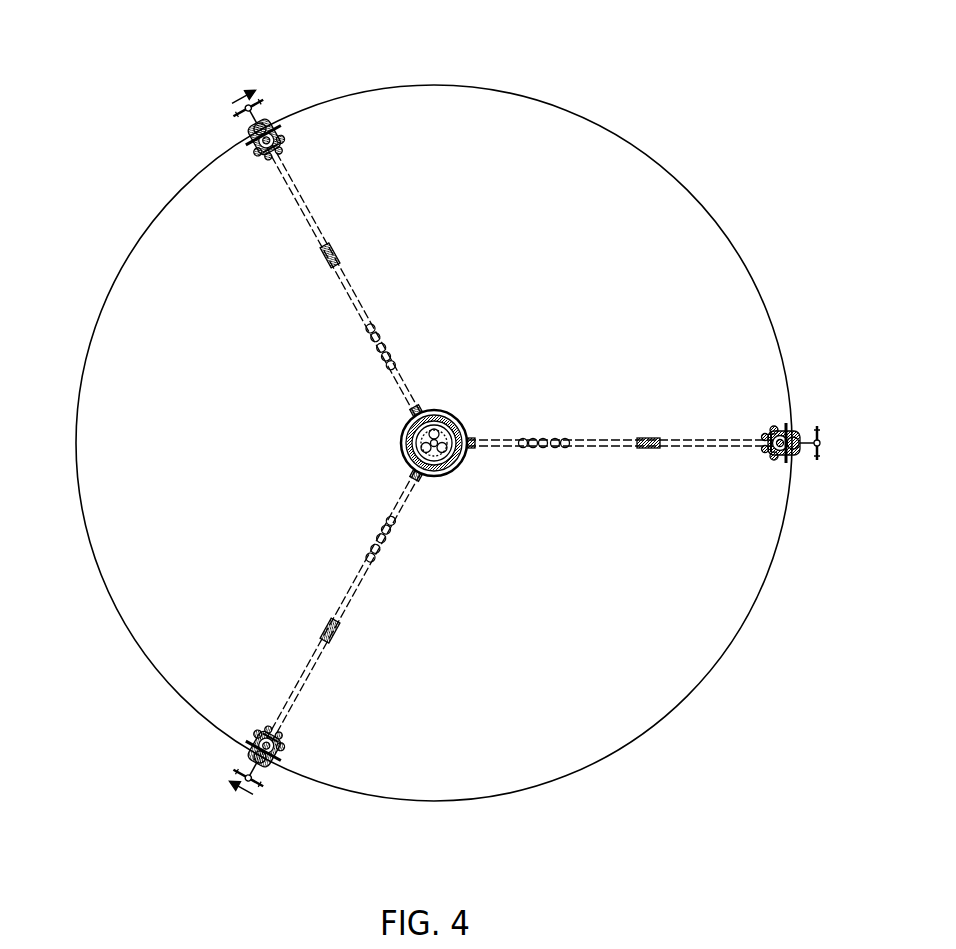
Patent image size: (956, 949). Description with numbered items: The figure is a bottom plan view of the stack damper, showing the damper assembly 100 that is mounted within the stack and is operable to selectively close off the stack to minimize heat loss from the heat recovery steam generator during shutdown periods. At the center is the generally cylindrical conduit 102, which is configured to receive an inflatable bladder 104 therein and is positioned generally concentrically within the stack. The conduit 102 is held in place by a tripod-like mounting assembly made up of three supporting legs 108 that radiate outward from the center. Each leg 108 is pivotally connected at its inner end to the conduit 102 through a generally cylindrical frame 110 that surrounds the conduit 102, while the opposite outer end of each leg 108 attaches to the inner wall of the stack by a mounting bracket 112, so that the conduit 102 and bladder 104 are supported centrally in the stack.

The damper assembly 100 is at (534, 58).
The conduit 102 is at (400, 455).
The inflatable bladder 104 is at (106, 541).
The supporting legs 108 is at (297, 184).
The cylindrical frame 110 is at (452, 474).
The mounting brackets 112 is at (231, 100).